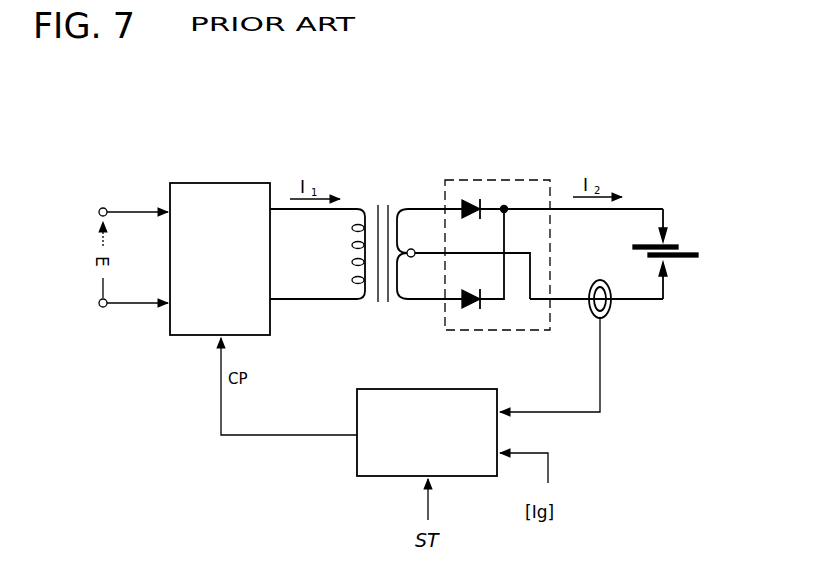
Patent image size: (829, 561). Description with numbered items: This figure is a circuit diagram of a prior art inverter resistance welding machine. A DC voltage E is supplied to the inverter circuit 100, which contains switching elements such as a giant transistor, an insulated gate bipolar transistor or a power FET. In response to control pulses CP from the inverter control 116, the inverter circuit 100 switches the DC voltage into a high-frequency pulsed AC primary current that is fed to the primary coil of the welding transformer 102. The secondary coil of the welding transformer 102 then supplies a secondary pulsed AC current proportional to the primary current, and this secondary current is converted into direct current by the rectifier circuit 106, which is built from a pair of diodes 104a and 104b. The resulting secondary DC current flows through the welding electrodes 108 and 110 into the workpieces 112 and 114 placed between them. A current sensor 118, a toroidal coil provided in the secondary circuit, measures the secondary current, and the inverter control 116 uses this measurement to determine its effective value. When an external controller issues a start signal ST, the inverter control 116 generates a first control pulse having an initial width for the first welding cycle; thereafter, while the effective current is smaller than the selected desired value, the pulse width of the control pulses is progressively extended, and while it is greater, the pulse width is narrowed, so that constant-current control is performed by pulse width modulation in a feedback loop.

The inverter circuit 100 is at (216, 181).
The welding transformer 102 is at (383, 203).
The diode 104a is at (466, 203).
The diode 104b is at (470, 307).
The rectifier circuit 106 is at (512, 228).
The welding electrode 108 is at (667, 219).
The welding electrode 110 is at (666, 280).
The workpiece 112 is at (634, 247).
The workpiece 114 is at (698, 251).
The inverter control 116 is at (355, 461).
The current sensor 118 is at (613, 308).